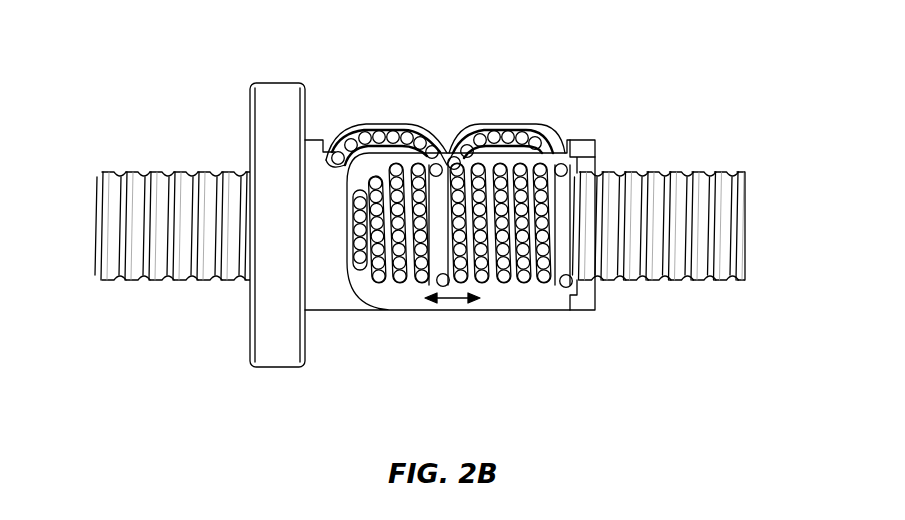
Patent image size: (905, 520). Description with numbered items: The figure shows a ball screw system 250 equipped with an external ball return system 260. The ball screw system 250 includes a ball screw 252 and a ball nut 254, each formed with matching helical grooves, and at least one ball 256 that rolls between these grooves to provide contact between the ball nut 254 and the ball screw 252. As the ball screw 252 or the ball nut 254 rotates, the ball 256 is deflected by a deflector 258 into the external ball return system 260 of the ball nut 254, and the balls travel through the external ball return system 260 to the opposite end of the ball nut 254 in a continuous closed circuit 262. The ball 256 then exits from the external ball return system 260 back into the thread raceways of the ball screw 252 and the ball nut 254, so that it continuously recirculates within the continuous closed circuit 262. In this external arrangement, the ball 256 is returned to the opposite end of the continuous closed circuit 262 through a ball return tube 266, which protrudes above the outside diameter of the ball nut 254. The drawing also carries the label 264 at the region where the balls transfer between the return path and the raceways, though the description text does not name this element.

The ball screw system 250 is at (742, 45).
The ball screw 252 is at (597, 278).
The ball nut 254 is at (547, 300).
The ball 256 is at (487, 130).
The deflector 258 is at (442, 155).
The external ball return system 260 is at (515, 130).
The continuous closed circuit 262 is at (327, 283).
The ball transfer junction 264 is at (448, 157).
The ball return tube 266 is at (550, 130).